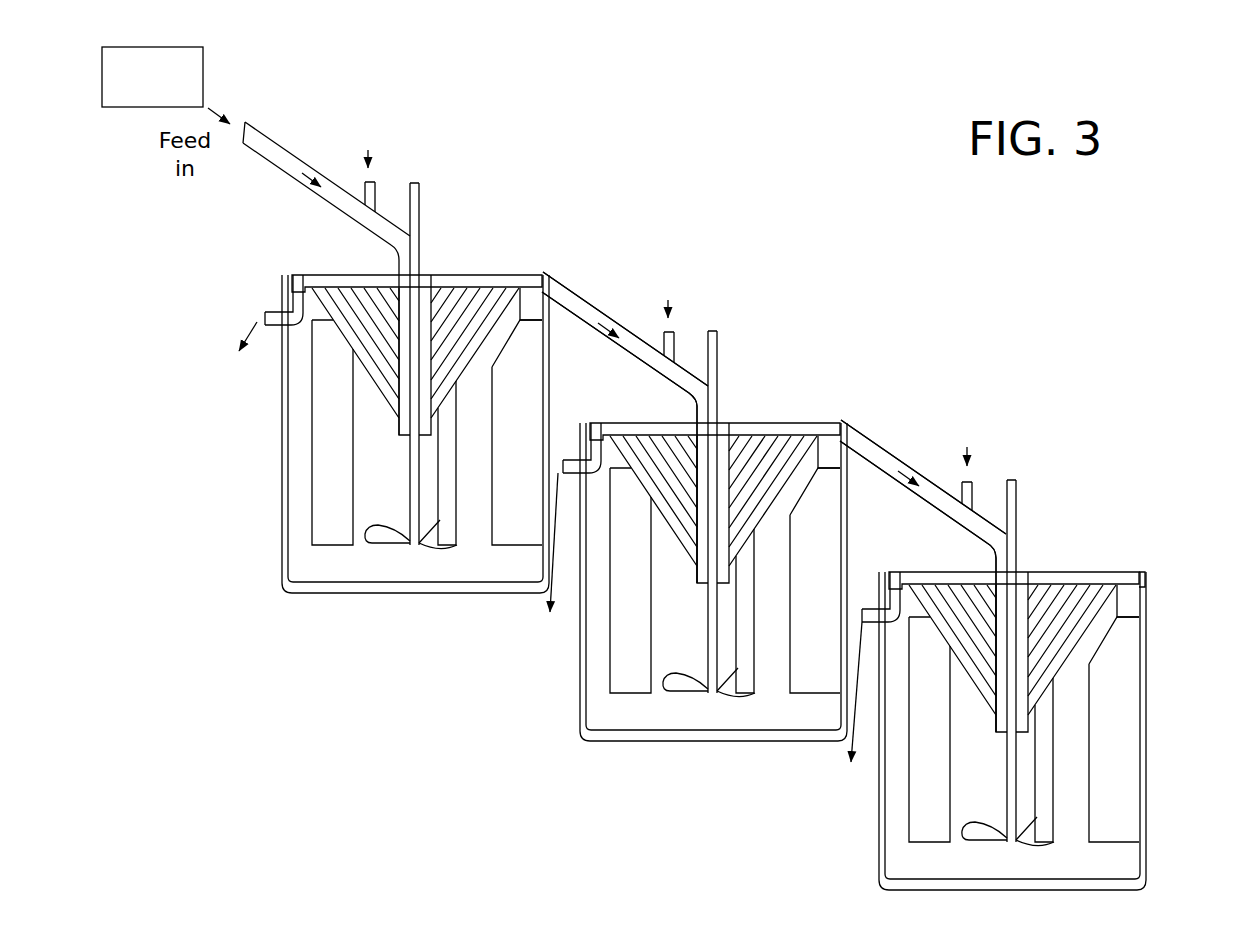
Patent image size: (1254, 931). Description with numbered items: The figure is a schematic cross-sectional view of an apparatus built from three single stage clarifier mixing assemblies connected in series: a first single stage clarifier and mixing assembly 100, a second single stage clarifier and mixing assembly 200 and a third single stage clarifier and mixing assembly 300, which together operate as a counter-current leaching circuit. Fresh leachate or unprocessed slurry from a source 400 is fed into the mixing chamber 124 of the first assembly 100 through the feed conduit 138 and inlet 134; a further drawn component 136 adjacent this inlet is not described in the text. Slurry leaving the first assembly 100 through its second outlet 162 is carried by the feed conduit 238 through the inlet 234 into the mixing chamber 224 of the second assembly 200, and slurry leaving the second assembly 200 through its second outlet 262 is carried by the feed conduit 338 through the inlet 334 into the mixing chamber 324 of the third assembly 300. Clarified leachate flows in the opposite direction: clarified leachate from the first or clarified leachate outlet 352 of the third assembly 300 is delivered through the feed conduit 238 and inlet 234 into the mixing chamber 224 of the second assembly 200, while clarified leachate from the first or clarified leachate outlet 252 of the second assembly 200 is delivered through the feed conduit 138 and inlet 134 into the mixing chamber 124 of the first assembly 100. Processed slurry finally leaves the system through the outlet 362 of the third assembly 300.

The first single stage clarifier and mixing assembly 100 is at (415, 331).
The mixing chamber 124 is at (295, 510).
The inlet 134 is at (408, 438).
The first stage agitator shaft 136 is at (425, 262).
The feed conduit 138 is at (330, 205).
The second outlet 162 is at (553, 275).
The second single stage clarifier and mixing assembly 200 is at (738, 502).
The mixing chamber 224 is at (598, 708).
The inlet 234 is at (708, 587).
The feed conduit 238 is at (684, 377).
The first or clarified leachate outlet 252 is at (573, 447).
The second outlet 262 is at (858, 420).
The third single stage clarifier and mixing assembly 300 is at (1006, 660).
The mixing chamber 324 is at (922, 870).
The inlet 334 is at (1017, 737).
The feed conduit 338 is at (978, 527).
The first or clarified leachate outlet 352 is at (862, 614).
The outlet 362 is at (1160, 600).
The source 400 is at (203, 73).